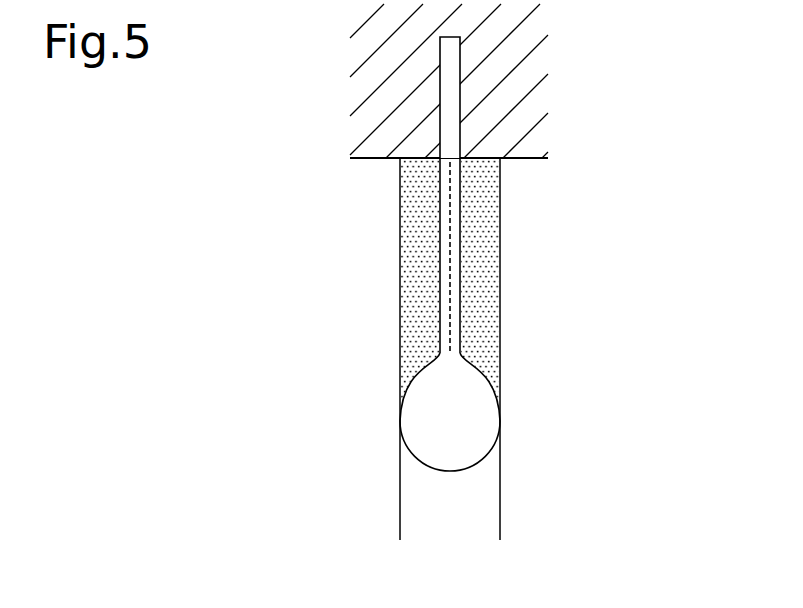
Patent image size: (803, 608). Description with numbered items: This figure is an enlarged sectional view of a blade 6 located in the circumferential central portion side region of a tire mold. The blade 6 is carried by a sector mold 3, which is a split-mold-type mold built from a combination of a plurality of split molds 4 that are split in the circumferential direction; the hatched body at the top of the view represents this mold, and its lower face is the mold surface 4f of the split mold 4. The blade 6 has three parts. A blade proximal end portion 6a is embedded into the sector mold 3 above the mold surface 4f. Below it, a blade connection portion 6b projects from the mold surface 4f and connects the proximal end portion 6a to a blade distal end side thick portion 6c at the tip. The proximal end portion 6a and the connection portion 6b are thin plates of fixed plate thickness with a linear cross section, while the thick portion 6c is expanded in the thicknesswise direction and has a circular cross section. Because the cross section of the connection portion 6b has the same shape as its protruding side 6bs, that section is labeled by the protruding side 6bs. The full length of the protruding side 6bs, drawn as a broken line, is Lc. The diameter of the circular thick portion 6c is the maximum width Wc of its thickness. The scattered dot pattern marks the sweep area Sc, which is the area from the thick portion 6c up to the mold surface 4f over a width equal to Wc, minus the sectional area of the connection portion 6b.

The sector mold 3 is at (412, 115).
The split mold 4 is at (375, 160).
The mold surface 4f is at (517, 160).
The blade 6 is at (562, 254).
The blade proximal end portion 6a is at (450, 108).
The blade connection portion 6b is at (559, 255).
The protruding side of the blade connection portion 6bs is at (460, 277).
The blade distal end side thick portion 6c is at (494, 417).
The sweep area Sc is at (407, 267).
The full length of the protruding side Lc is at (443, 320).
The maximum width of the thickness of the blade distal end side thick portion Wc is at (489, 526).